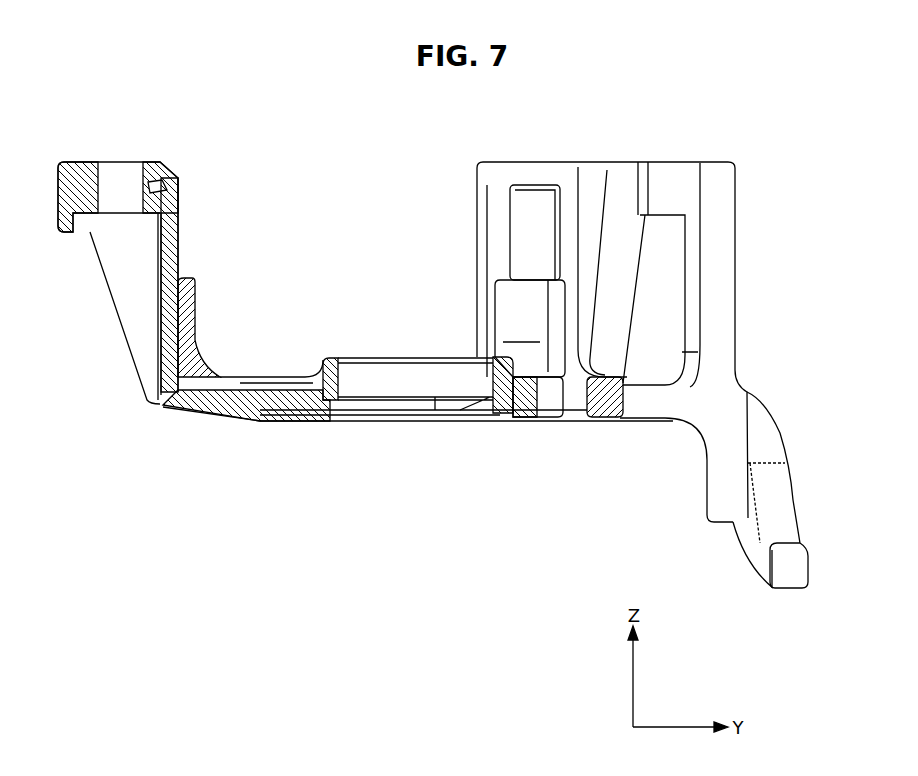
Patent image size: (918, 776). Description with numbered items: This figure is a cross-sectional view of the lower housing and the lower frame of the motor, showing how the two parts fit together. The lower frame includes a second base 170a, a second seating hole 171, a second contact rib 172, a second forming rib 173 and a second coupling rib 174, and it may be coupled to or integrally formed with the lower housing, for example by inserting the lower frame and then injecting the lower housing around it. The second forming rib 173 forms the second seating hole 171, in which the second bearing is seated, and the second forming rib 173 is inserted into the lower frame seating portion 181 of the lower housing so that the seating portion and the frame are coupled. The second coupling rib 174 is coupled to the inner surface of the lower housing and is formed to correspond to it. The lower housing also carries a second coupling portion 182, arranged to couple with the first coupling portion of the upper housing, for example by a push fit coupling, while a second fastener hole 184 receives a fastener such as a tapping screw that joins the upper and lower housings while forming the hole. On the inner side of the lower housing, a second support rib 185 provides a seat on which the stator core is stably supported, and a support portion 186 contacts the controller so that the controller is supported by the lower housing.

The second base 170a is at (302, 410).
The second seating hole 171 is at (415, 377).
The second contact rib 172 is at (177, 213).
The second forming rib 173 is at (328, 358).
The second coupling rib 174 is at (167, 182).
The lower frame seating portion 181 is at (508, 413).
The second coupling portion 182 is at (720, 177).
The second fastener hole 184 is at (103, 197).
The second support rib 185 is at (192, 294).
The support portion 186 is at (793, 573).